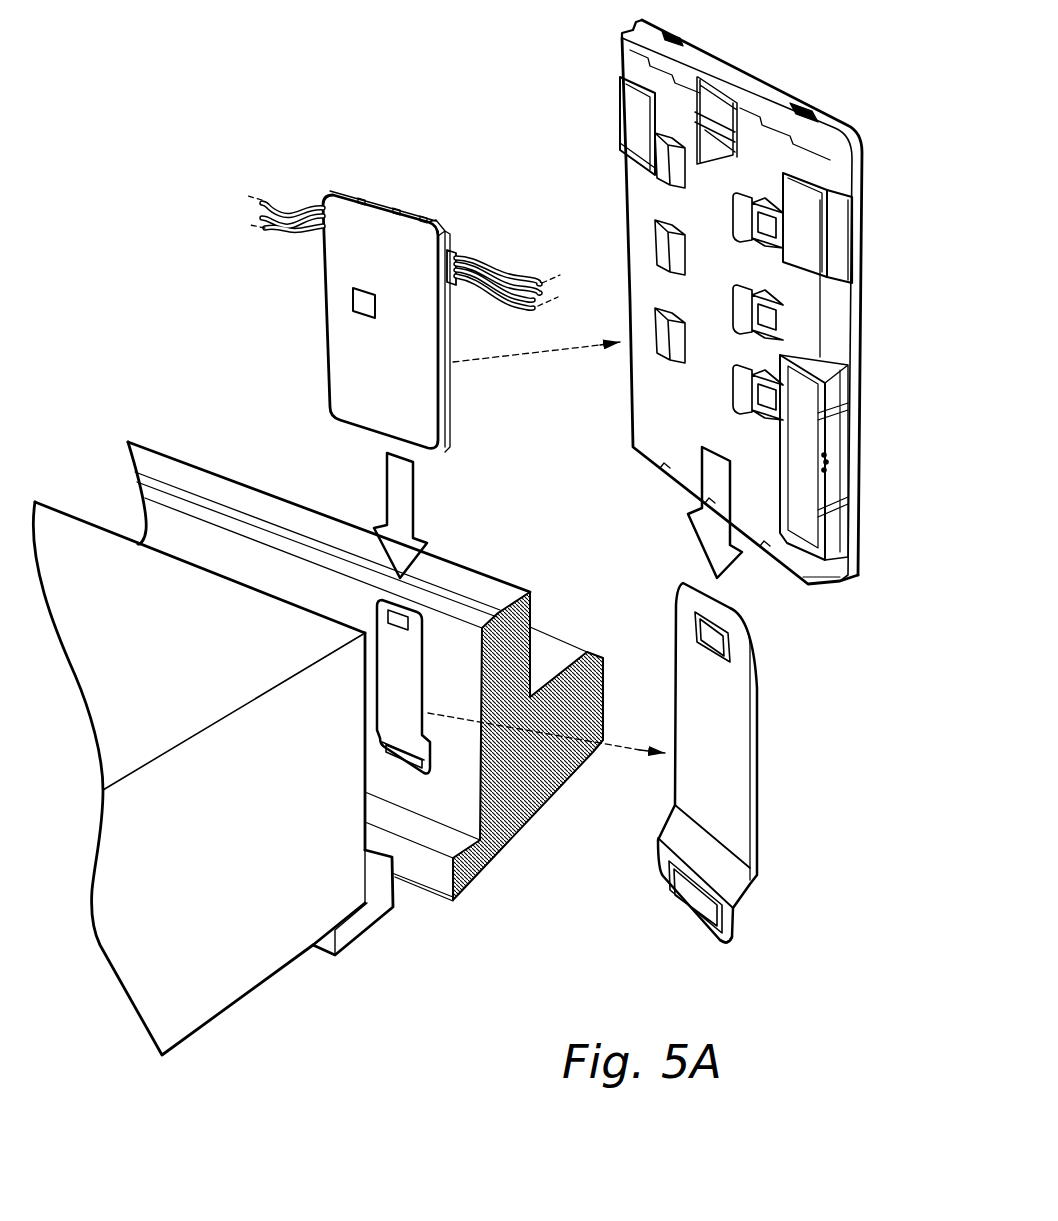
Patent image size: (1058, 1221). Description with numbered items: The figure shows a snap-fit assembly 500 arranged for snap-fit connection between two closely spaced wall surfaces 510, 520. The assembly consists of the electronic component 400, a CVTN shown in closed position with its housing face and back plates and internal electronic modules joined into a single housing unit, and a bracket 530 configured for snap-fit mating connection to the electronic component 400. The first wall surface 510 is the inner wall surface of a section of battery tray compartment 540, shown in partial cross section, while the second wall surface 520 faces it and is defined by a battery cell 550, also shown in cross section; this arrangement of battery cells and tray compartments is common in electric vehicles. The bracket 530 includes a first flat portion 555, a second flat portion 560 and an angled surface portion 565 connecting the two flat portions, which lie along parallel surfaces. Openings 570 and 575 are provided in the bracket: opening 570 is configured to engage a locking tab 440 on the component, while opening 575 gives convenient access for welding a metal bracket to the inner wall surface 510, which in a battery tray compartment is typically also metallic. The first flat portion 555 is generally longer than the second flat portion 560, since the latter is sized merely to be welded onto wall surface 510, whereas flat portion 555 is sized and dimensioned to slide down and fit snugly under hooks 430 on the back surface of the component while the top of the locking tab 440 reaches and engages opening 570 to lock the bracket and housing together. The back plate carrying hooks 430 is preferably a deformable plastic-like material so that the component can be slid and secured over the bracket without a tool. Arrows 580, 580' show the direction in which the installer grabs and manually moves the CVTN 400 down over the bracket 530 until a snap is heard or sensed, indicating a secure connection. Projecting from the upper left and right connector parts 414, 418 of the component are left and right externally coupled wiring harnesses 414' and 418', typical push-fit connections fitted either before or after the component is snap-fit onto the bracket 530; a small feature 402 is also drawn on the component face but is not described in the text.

The electronic component (CVTN) 400 is at (587, 301).
The indicator on circuit board 402 is at (366, 297).
The connector part 414 is at (857, 265).
The wiring harness 414' is at (276, 183).
The connector part 418 is at (590, 126).
The wiring harness 418' is at (503, 254).
The hooks 430 is at (672, 345).
The locking tab 440 is at (715, 115).
The snap-fit assembly 500 is at (362, 141).
The inner wall surface 510 is at (457, 772).
The wall surface 520 is at (368, 772).
The bracket 530 is at (752, 789).
The battery tray compartment 540 is at (396, 691).
The battery cell 550 is at (236, 673).
The first flat portion 555 is at (733, 742).
The second flat portion 560 is at (730, 927).
The angled surface portion 565 is at (728, 867).
The opening 570 is at (716, 640).
The opening 575 is at (703, 905).
The arrow 580 is at (353, 513).
The arrow 580' is at (670, 515).